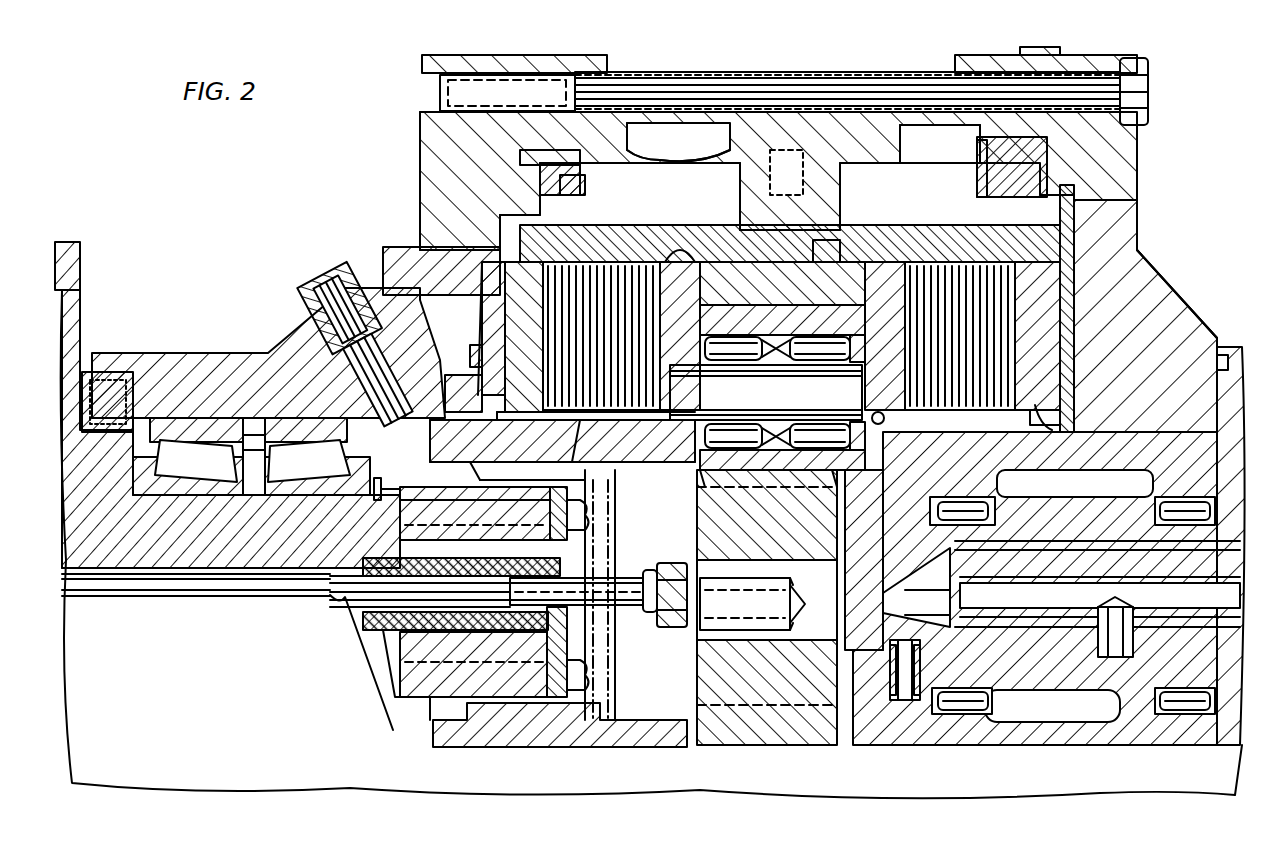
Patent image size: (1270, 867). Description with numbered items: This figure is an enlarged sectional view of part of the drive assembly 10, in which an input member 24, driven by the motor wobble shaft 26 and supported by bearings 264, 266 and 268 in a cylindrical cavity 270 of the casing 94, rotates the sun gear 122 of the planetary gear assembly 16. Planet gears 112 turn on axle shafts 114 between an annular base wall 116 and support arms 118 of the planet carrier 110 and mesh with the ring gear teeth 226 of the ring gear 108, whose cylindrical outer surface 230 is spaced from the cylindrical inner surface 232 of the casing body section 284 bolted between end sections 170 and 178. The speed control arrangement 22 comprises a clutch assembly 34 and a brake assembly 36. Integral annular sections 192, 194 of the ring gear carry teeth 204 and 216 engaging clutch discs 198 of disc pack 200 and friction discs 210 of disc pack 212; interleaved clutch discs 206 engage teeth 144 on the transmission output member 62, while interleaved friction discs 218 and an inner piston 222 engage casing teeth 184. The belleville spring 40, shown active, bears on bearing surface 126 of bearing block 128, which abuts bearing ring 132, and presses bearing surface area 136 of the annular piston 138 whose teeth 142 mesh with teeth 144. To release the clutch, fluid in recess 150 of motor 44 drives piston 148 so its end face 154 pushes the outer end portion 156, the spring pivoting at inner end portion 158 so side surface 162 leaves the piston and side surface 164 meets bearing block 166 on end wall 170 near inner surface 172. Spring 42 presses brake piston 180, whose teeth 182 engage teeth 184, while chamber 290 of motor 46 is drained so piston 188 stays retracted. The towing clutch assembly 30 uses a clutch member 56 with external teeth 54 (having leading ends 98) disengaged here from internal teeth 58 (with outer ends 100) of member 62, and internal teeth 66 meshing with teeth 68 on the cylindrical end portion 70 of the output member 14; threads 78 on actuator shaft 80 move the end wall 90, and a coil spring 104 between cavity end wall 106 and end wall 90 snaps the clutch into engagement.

The drive assembly 10 is at (235, 250).
The output member 14 is at (85, 265).
The planetary transmission or gear assembly 16 is at (775, 285).
The speed control arrangement 22 is at (1117, 247).
The input member 24 is at (1008, 725).
The wobble shaft 26 is at (1085, 735).
The towing clutch assembly 30 is at (400, 725).
The clutch assembly 34 is at (470, 245).
The brake assembly 36 is at (1040, 262).
The belleville spring 40 is at (420, 292).
The belleville spring 42 is at (1072, 303).
The fluid motor 44 is at (585, 160).
The fluid motor 46 is at (990, 140).
The teeth 54 is at (400, 490).
The clutch member 56 is at (395, 680).
The teeth 58 is at (610, 477).
The transmission output member 62 is at (405, 457).
The teeth 66 is at (400, 500).
The teeth 68 is at (600, 522).
The cylindrical end portion 70 is at (460, 500).
The screw threads 78 is at (645, 575).
The actuator shaft 80 is at (118, 598).
The end wall 90 is at (555, 745).
The casing 94 is at (165, 350).
The leading ends 98 is at (403, 758).
The outer ends 100 is at (458, 758).
The coil spring 104 is at (380, 632).
The end wall 106 is at (350, 605).
The ring gear 108 is at (782, 332).
The planet carrier 110 is at (690, 278).
The planet gears 112 is at (845, 275).
The axle shaft 114 is at (862, 425).
The annular base wall 116 is at (680, 368).
The support arm 118 is at (862, 450).
The sun gear 122 is at (700, 692).
The annular bearing surface 126 is at (497, 430).
The bearing block 128 is at (455, 382).
The bearing ring 132 is at (410, 390).
The annular bearing surface area 136 is at (485, 300).
The annular piston 138 is at (485, 322).
The teeth 142 is at (554, 440).
The teeth 144 is at (647, 440).
The annular piston 148 is at (620, 120).
The annular recess 150 is at (640, 170).
The annular end face 154 is at (545, 165).
The radially outer end portion 156 is at (530, 200).
The radially inner end portion 158 is at (515, 352).
The annular major side surface area 162 is at (518, 208).
The annular major side surface 164 is at (500, 200).
The annular bearing block 166 is at (478, 352).
The end wall 170 is at (232, 372).
The circular inner surface 172 is at (500, 270).
The end section 178 is at (1200, 322).
The annular piston 180 is at (1050, 400).
The teeth 182 is at (1018, 415).
The teeth 184 is at (975, 445).
The annular piston 188 is at (985, 150).
The annular section 192 is at (645, 237).
The annular section 194 is at (960, 217).
The annular discs 198 is at (615, 262).
The disc pack 200 is at (695, 247).
The teeth 204 is at (692, 242).
The clutch discs 206 is at (550, 459).
The friction discs 210 is at (1002, 262).
The disc pack 212 is at (1015, 345).
The teeth 216 is at (834, 245).
The friction discs 218 is at (925, 410).
The inner piston 222 is at (834, 266).
The ring gear teeth 226 is at (813, 337).
The cylindrical outer surface 230 is at (747, 215).
The cylindrical inner surface 232 is at (800, 200).
The bearing 264 is at (962, 714).
The bearing 266 is at (1178, 714).
The bearing 268 is at (905, 712).
The cylindrical cavity 270 is at (1059, 659).
The body section 284 is at (752, 140).
The annular chamber 290 is at (982, 160).